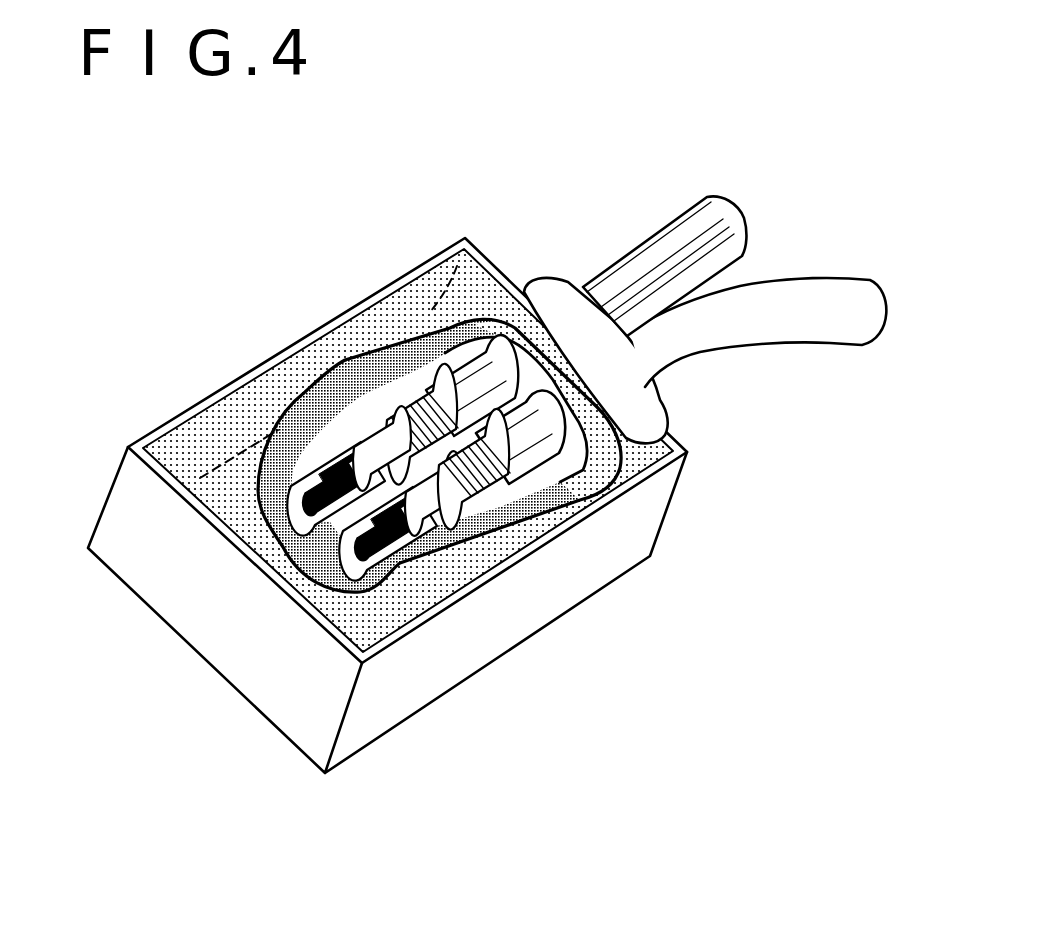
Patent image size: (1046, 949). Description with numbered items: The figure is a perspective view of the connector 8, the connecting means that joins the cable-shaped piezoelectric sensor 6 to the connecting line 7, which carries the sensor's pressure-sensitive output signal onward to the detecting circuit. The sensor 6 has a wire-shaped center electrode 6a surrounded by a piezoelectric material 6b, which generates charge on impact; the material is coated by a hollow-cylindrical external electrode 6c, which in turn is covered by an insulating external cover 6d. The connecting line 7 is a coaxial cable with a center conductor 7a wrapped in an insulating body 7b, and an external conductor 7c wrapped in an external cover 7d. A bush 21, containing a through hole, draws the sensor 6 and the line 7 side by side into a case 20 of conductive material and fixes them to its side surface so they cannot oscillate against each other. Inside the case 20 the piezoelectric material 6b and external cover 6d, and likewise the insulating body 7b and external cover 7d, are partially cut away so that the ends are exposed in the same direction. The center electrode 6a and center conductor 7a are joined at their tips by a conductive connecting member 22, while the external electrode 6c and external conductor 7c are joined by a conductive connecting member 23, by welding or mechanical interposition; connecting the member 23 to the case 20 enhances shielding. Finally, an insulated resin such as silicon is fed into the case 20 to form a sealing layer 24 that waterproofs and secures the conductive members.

The piezoelectric sensor 6 is at (645, 238).
The center electrode 6a is at (293, 428).
The piezoelectric material 6b is at (360, 443).
The external electrode 6c is at (410, 402).
The external cover 6d is at (452, 388).
The connecting line 7 is at (782, 348).
The center conductor 7a is at (392, 522).
The insulating body 7b is at (423, 467).
The external conductor 7c is at (490, 450).
The external cover 7d is at (527, 442).
The connector 8 is at (265, 305).
The case 20 is at (158, 585).
The bush 21 is at (640, 357).
The connecting member 22 is at (298, 568).
The connecting member 23 is at (500, 493).
The sealing layer 24 is at (193, 460).